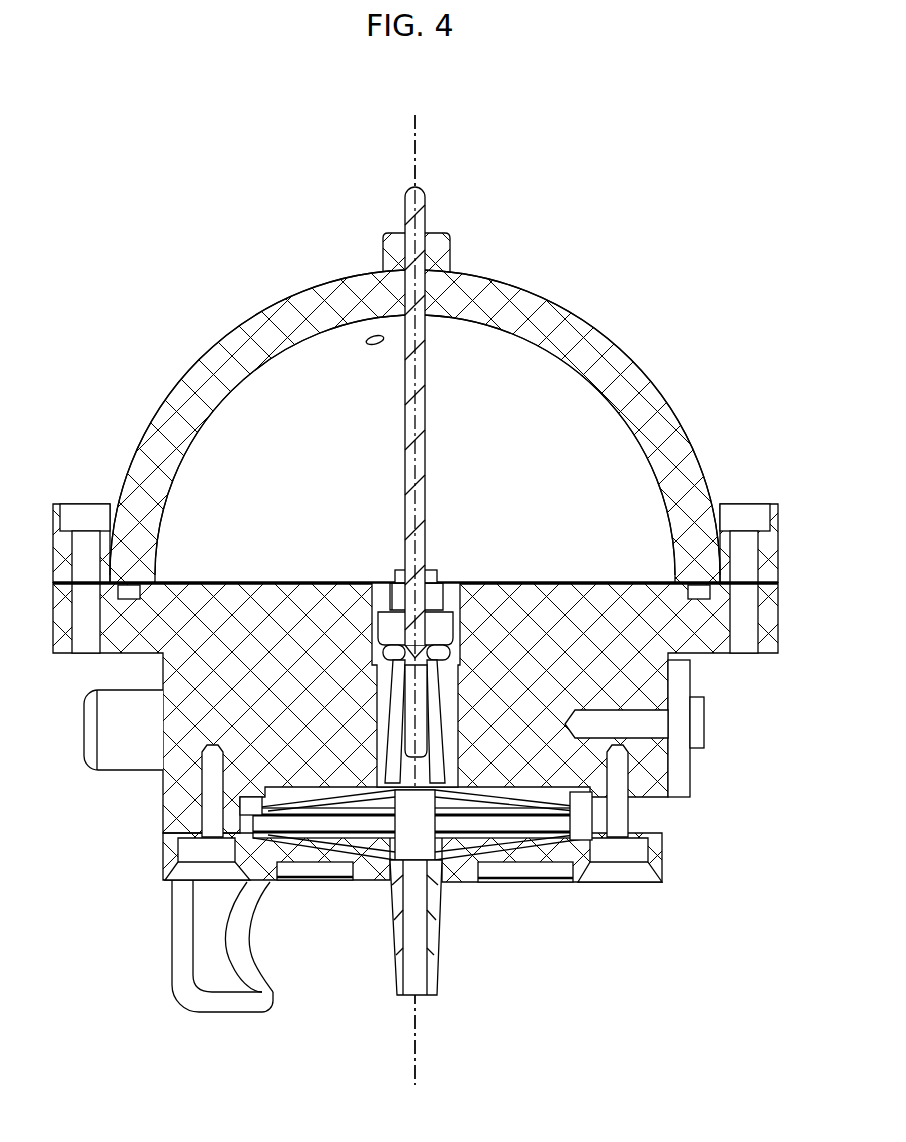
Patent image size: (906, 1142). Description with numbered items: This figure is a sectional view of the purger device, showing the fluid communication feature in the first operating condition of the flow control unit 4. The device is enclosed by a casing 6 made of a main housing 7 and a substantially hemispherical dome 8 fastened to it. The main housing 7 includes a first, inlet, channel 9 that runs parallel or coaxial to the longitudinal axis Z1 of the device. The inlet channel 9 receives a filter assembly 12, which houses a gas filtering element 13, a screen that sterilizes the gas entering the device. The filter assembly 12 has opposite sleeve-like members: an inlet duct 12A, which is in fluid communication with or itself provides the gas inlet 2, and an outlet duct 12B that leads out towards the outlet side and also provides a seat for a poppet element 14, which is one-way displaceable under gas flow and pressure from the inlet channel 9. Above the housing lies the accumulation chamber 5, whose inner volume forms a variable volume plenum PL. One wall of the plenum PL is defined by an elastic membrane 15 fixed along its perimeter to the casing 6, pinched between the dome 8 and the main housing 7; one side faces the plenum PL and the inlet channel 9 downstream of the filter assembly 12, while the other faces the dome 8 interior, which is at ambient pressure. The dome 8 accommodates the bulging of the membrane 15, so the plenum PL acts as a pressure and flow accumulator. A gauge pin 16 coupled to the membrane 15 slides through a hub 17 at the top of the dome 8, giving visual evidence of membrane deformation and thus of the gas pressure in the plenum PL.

The gas inlet 2 is at (428, 990).
The flow control unit 4 is at (110, 775).
The accumulation chamber 5 is at (329, 457).
The casing 6 is at (668, 395).
The main housing 7 is at (120, 655).
The dome 8 is at (178, 383).
The inlet channel 9 is at (450, 690).
The filter assembly 12 is at (545, 845).
The inlet duct 12A is at (445, 925).
The outlet duct 12B is at (397, 727).
The gas filtering element 13 is at (425, 730).
The poppet element 14 is at (440, 720).
The elastic membrane 15 is at (450, 582).
The gauge pin 16 is at (427, 365).
The hub 17 is at (452, 250).
The plenum PL is at (383, 600).
The longitudinal axis Z1 is at (425, 158).